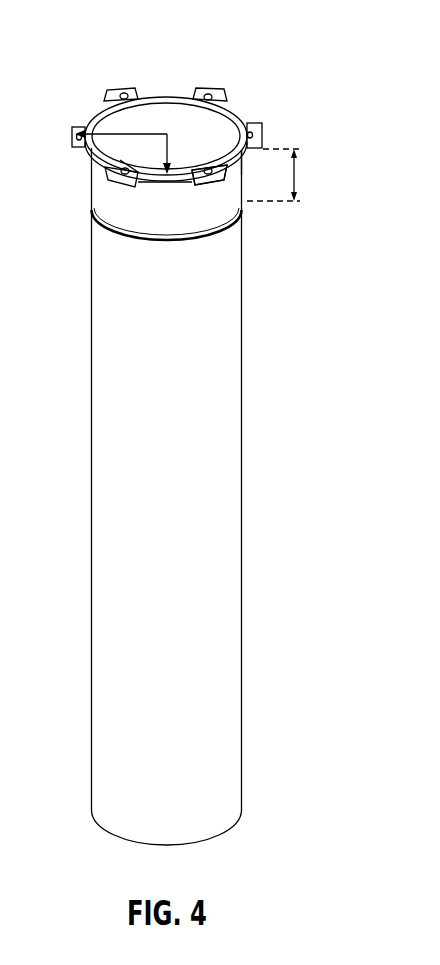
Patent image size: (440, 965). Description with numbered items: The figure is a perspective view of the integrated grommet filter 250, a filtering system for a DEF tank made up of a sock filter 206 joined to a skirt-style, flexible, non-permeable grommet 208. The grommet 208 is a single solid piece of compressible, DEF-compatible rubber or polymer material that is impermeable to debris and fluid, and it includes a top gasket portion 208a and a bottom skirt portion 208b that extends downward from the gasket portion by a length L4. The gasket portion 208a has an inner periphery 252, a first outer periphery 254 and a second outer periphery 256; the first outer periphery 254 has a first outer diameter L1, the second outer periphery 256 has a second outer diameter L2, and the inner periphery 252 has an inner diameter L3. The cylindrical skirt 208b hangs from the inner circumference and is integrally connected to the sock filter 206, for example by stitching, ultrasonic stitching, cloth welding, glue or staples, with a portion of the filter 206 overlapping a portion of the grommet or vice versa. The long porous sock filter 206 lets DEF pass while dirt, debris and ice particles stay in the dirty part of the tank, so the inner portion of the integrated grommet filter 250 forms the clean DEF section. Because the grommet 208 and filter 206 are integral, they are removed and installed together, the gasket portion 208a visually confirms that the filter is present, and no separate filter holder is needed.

The sock filter 206 is at (222, 450).
The grommet 208 is at (305, 134).
The gasket portion 208a is at (222, 96).
The skirt portion 208b is at (110, 210).
The integrated grommet filter 250 is at (233, 32).
The inner periphery 252 is at (212, 157).
The first outer periphery 254 is at (208, 181).
The second outer periphery 256 is at (246, 158).
The first outer diameter L1 is at (116, 147).
The second outer diameter L2 is at (128, 168).
The inner diameter L3 is at (131, 180).
The skirt length L4 is at (296, 176).